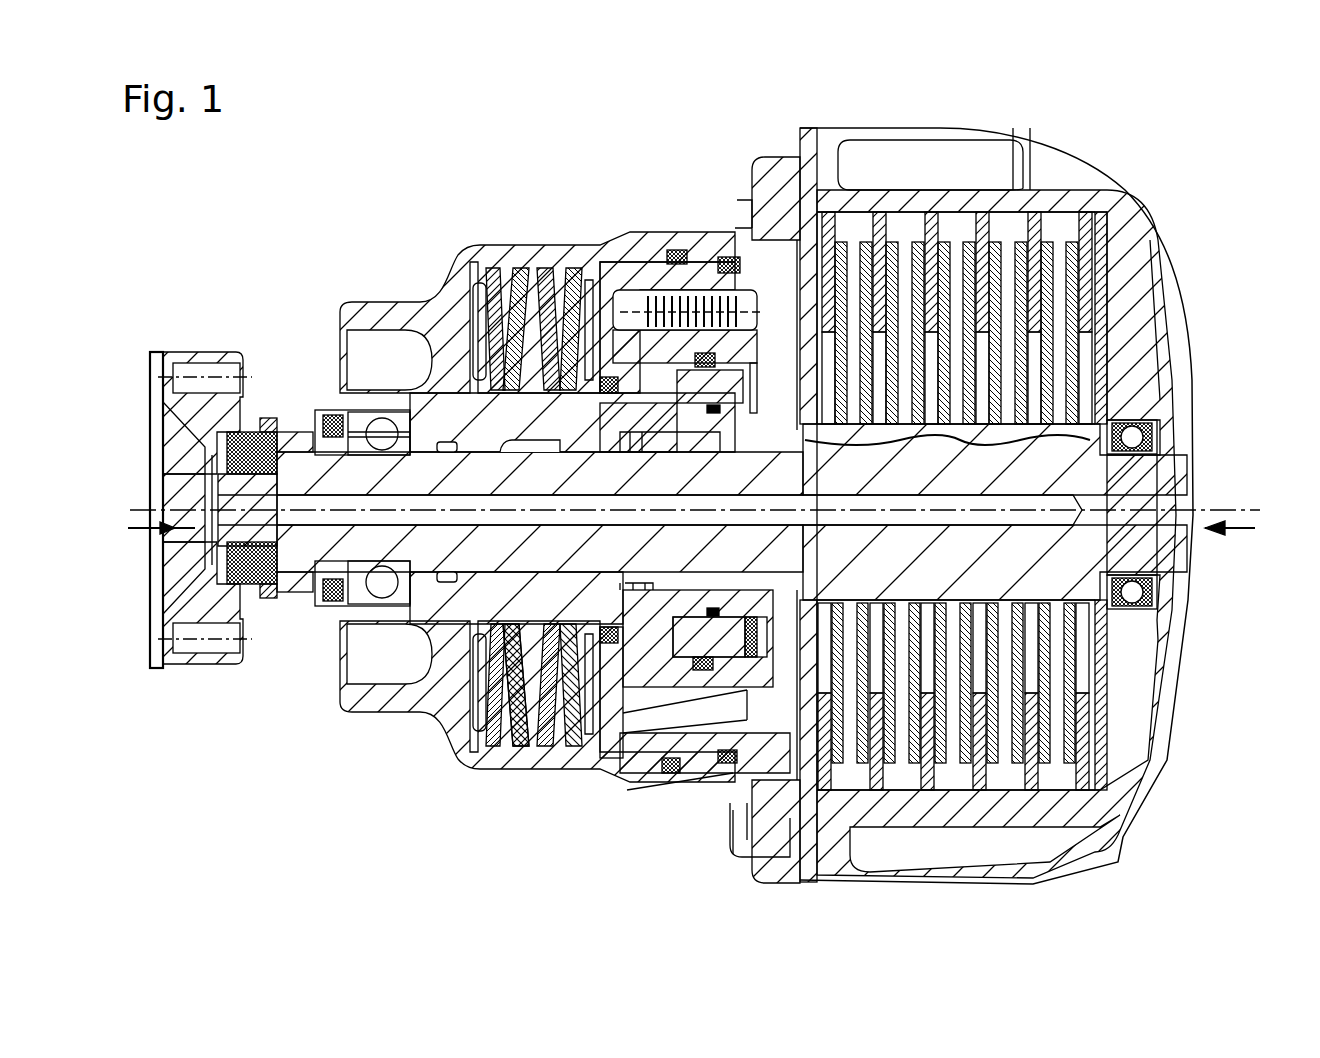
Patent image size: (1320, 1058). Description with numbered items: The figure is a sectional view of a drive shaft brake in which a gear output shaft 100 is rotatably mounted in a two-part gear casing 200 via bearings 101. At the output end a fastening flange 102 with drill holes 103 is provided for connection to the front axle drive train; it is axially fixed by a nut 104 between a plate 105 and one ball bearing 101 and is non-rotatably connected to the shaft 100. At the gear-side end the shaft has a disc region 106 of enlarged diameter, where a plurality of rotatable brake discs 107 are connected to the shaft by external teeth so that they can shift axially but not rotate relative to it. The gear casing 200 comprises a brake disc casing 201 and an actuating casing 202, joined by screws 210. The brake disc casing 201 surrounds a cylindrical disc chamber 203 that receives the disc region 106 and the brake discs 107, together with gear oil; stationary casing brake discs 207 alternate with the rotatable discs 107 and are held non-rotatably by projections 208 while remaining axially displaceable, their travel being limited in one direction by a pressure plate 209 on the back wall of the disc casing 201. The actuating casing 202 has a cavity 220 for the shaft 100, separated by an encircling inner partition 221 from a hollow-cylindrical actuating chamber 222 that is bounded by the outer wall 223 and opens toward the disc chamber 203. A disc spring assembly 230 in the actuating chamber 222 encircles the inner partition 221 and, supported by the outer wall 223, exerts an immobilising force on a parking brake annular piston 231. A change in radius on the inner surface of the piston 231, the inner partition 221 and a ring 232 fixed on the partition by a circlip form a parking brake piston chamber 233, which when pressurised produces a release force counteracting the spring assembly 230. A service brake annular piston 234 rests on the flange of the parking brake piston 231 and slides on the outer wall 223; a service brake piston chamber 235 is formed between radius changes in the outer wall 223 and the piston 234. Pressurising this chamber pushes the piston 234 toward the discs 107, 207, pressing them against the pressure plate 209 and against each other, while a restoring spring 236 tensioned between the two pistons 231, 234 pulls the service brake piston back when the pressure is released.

The gear output shaft 100 is at (1140, 491).
The bearings 101 is at (368, 625).
The fastening flange 102 is at (290, 597).
The drill holes 103 is at (212, 632).
The nut 104 is at (240, 586).
The plate 105 is at (268, 420).
The disc region 106 is at (937, 443).
The rotatable brake discs 107 is at (1078, 623).
The gear casing 200 is at (1157, 187).
The brake disc casing 201 is at (1085, 152).
The actuating casing 202 is at (372, 222).
The disc chamber 203 is at (808, 270).
The casing brake discs 207 is at (960, 225).
The projections 208 is at (812, 210).
The pressure plate 209 is at (1100, 303).
The screws 210 is at (738, 830).
The cavity 220 is at (565, 590).
The inner partition 221 is at (652, 610).
The actuating chamber 222 is at (525, 732).
The outer wall 223 is at (653, 775).
The disc spring assembly 230 is at (497, 268).
The parking brake annular piston 231 is at (610, 292).
The ring 232 is at (693, 285).
The parking brake piston chamber 233 is at (657, 258).
The service brake annular piston 234 is at (672, 265).
The service brake piston chamber 235 is at (717, 300).
The restoring spring 236 is at (728, 298).